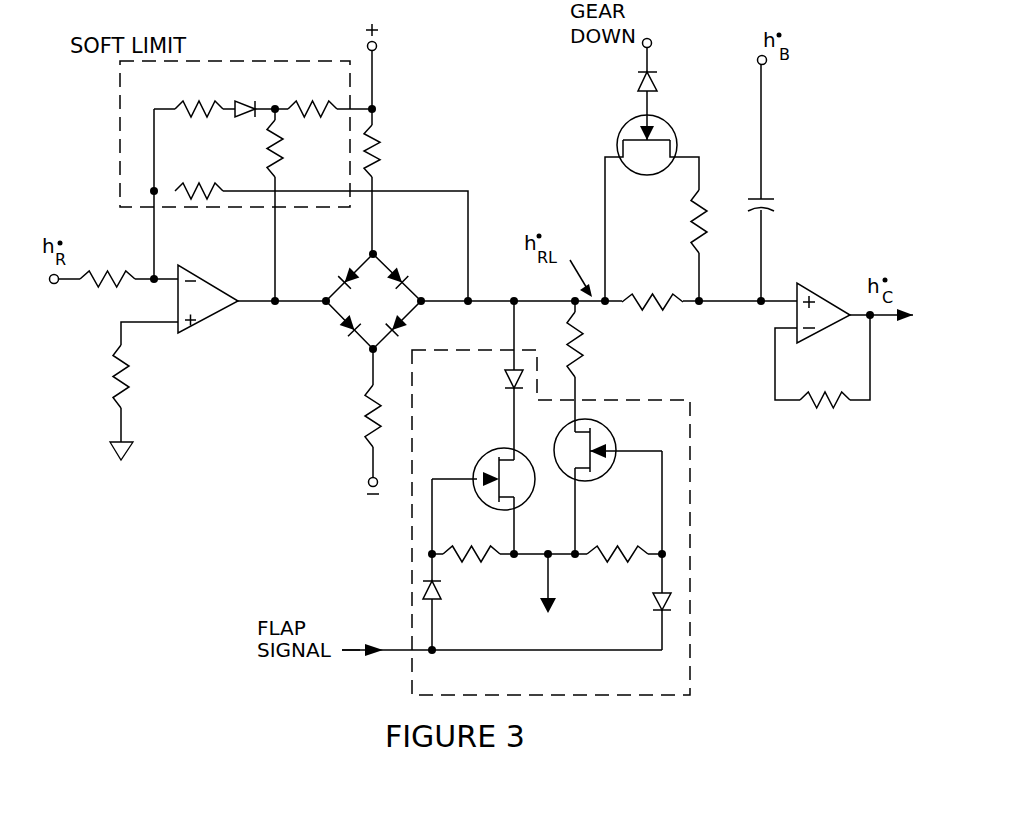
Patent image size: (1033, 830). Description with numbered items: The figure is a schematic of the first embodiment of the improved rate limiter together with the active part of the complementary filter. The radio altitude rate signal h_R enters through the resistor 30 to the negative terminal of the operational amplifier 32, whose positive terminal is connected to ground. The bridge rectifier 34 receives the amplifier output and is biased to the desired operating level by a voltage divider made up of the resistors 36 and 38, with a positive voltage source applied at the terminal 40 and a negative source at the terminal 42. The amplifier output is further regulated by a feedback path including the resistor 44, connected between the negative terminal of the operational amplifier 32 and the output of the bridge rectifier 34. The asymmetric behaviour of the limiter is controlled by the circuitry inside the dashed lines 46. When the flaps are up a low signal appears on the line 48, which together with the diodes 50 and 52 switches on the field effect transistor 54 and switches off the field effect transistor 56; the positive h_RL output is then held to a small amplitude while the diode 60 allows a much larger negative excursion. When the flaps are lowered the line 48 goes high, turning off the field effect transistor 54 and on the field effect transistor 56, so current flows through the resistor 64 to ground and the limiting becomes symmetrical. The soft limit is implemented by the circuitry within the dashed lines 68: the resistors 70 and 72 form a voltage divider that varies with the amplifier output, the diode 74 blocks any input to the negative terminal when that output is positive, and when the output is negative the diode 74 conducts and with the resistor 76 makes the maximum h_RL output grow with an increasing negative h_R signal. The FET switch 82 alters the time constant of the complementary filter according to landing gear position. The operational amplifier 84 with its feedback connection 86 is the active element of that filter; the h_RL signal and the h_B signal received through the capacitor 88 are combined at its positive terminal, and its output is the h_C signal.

The resistor 30 is at (105, 272).
The operational amplifier 32 is at (218, 288).
The bridge rectifier 34 is at (389, 317).
The resistor 36 is at (393, 151).
The resistor 38 is at (366, 420).
The terminal 40 is at (378, 46).
The terminal 42 is at (368, 482).
The resistor 44 is at (193, 186).
The dashed lines 46 is at (690, 655).
The line 48 is at (345, 648).
The diode 50 is at (440, 595).
The diode 52 is at (653, 601).
The field effect transistor 54 is at (481, 454).
The field effect transistor 56 is at (609, 430).
The diode 60 is at (505, 377).
The resistor 64 is at (582, 367).
The dashed lines 68 is at (120, 96).
The resistor 70 is at (282, 142).
The resistor 72 is at (318, 94).
The diode 74 is at (250, 103).
The resistor 76 is at (181, 104).
The FET switch 82 is at (663, 123).
The operational amplifier 84 is at (814, 294).
The feedback connection 86 is at (842, 408).
The capacitor 88 is at (767, 197).